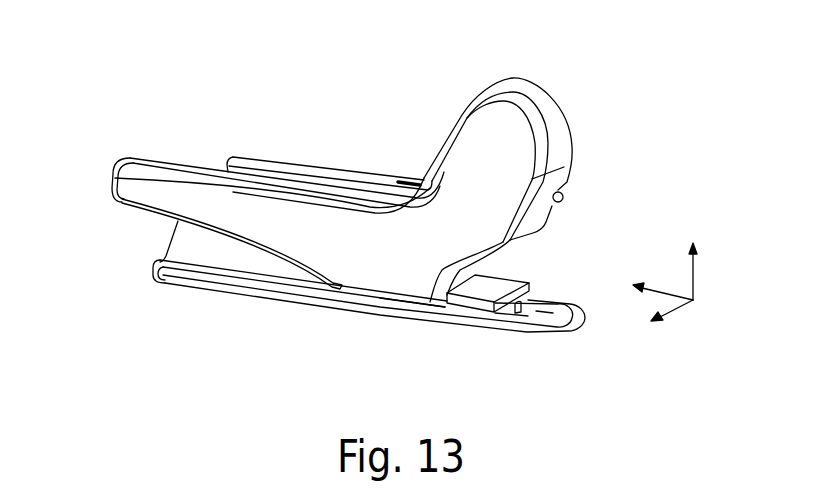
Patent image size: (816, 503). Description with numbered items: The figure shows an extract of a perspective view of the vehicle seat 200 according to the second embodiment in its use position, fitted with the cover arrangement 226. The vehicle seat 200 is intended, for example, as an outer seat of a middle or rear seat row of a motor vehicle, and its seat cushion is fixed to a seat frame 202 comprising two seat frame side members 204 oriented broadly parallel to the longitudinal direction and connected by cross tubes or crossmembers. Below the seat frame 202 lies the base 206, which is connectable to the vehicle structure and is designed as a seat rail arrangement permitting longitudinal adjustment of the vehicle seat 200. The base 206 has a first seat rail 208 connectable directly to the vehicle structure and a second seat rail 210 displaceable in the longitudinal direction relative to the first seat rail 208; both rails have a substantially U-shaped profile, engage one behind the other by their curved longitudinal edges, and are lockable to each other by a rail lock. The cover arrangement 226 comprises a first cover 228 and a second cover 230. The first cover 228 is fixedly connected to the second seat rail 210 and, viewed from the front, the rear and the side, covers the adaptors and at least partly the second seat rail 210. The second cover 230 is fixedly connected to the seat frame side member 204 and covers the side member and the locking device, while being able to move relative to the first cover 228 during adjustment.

The vehicle seat 200 is at (184, 68).
The seat frame 202 is at (300, 166).
The seat frame side member 204 is at (278, 185).
The base 206 is at (124, 276).
The first seat rail 208 is at (499, 332).
The second seat rail 210 is at (572, 307).
The cover arrangement 226 is at (636, 154).
The first cover 228 is at (287, 270).
The second cover 230 is at (391, 272).